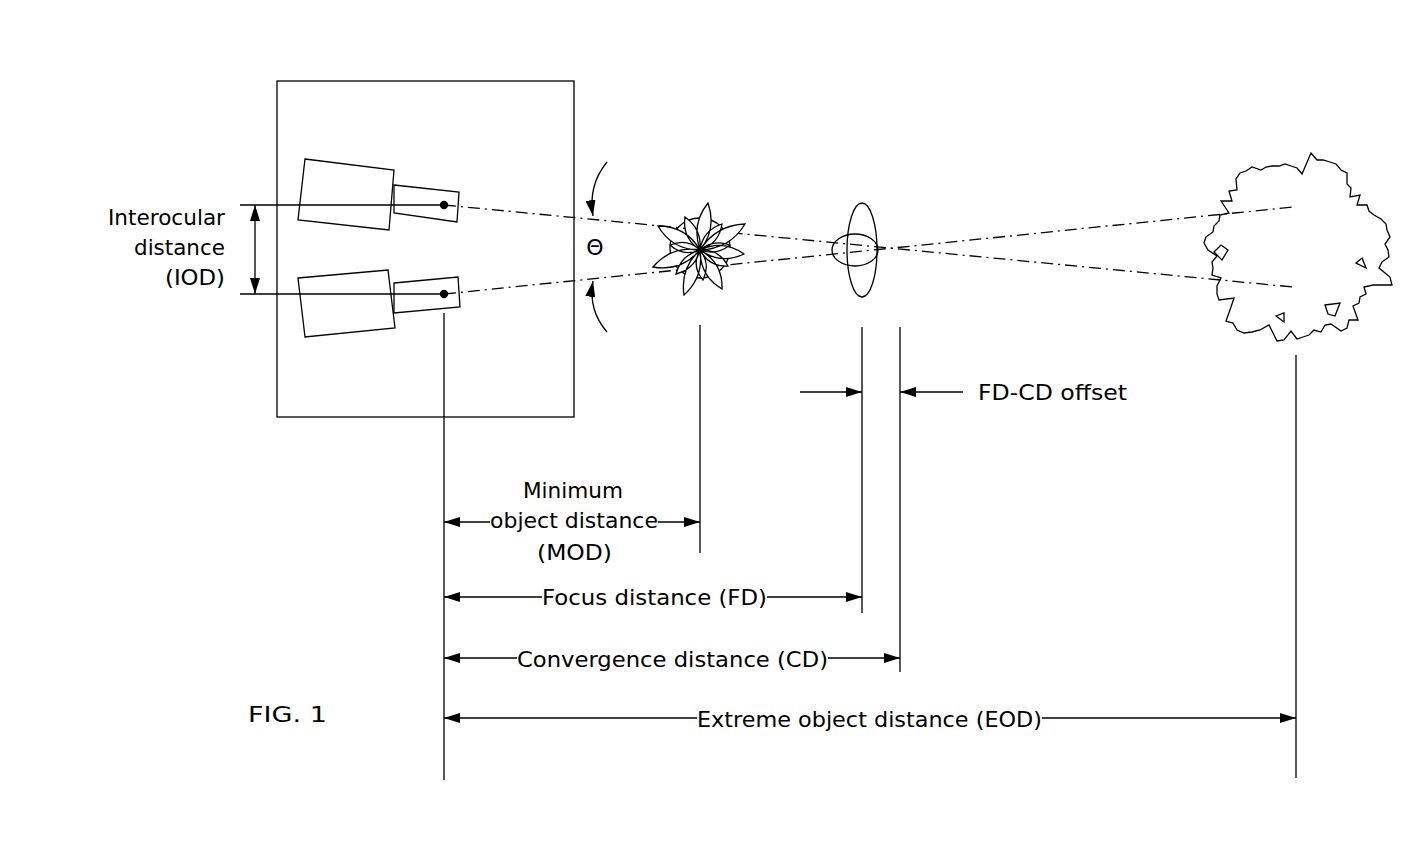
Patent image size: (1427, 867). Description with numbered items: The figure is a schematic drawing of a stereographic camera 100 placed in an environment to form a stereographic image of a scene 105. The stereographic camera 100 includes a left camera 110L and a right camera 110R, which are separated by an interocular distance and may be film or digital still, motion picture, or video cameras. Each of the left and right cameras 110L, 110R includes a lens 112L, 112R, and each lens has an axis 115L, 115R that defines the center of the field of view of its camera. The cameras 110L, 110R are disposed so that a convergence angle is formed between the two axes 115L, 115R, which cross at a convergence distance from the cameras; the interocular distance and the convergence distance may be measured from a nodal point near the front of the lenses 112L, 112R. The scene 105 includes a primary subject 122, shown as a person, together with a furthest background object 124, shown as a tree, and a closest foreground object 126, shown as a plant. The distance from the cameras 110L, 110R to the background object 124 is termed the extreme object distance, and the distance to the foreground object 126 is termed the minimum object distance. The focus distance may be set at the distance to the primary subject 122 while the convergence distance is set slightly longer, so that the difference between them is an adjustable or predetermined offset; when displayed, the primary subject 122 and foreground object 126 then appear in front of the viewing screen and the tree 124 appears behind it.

The scene 105 is at (657, 35).
The stereographic camera 100 is at (425, 249).
The left camera 110L is at (338, 172).
The right camera 110R is at (372, 335).
The lens 112L is at (425, 185).
The lens 112R is at (458, 307).
The axis 115L is at (1033, 260).
The axis 115R is at (1033, 233).
The primary subject 122 is at (870, 208).
The furthest background object 124 is at (1303, 162).
The closest foreground object 126 is at (718, 217).